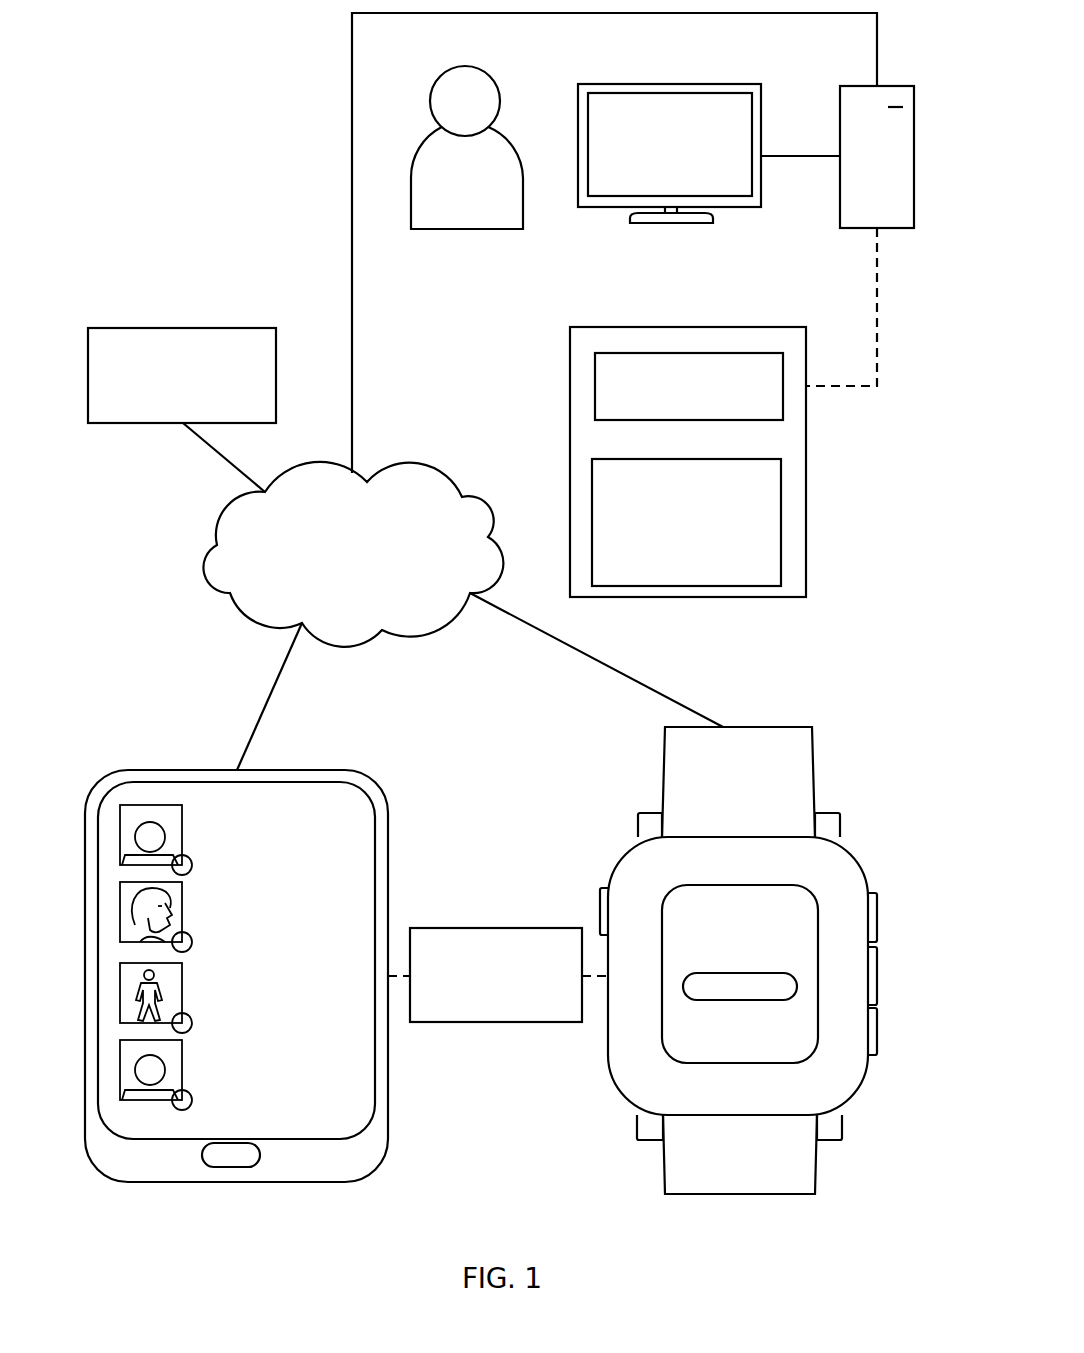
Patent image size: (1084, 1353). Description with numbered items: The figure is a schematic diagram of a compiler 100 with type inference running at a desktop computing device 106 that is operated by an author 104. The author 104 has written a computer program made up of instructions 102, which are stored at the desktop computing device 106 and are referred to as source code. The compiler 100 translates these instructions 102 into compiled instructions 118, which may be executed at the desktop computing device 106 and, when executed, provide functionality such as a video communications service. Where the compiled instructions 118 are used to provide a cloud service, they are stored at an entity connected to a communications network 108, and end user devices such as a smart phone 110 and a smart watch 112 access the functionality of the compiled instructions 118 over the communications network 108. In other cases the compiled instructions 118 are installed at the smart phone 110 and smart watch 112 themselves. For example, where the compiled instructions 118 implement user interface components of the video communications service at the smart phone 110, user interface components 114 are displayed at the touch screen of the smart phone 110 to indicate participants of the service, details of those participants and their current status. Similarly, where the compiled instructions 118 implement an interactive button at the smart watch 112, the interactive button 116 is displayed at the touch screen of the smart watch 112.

The compiler 100 is at (670, 520).
The instructions 102 is at (670, 412).
The author 104 is at (447, 192).
The desktop computing device 106 is at (858, 168).
The communications network 108 is at (335, 560).
The smart phone 110 is at (215, 955).
The smart watch 112 is at (781, 960).
The user interface components 114 is at (120, 835).
The interactive button 116 is at (797, 984).
The compiled instructions 118 is at (163, 415).